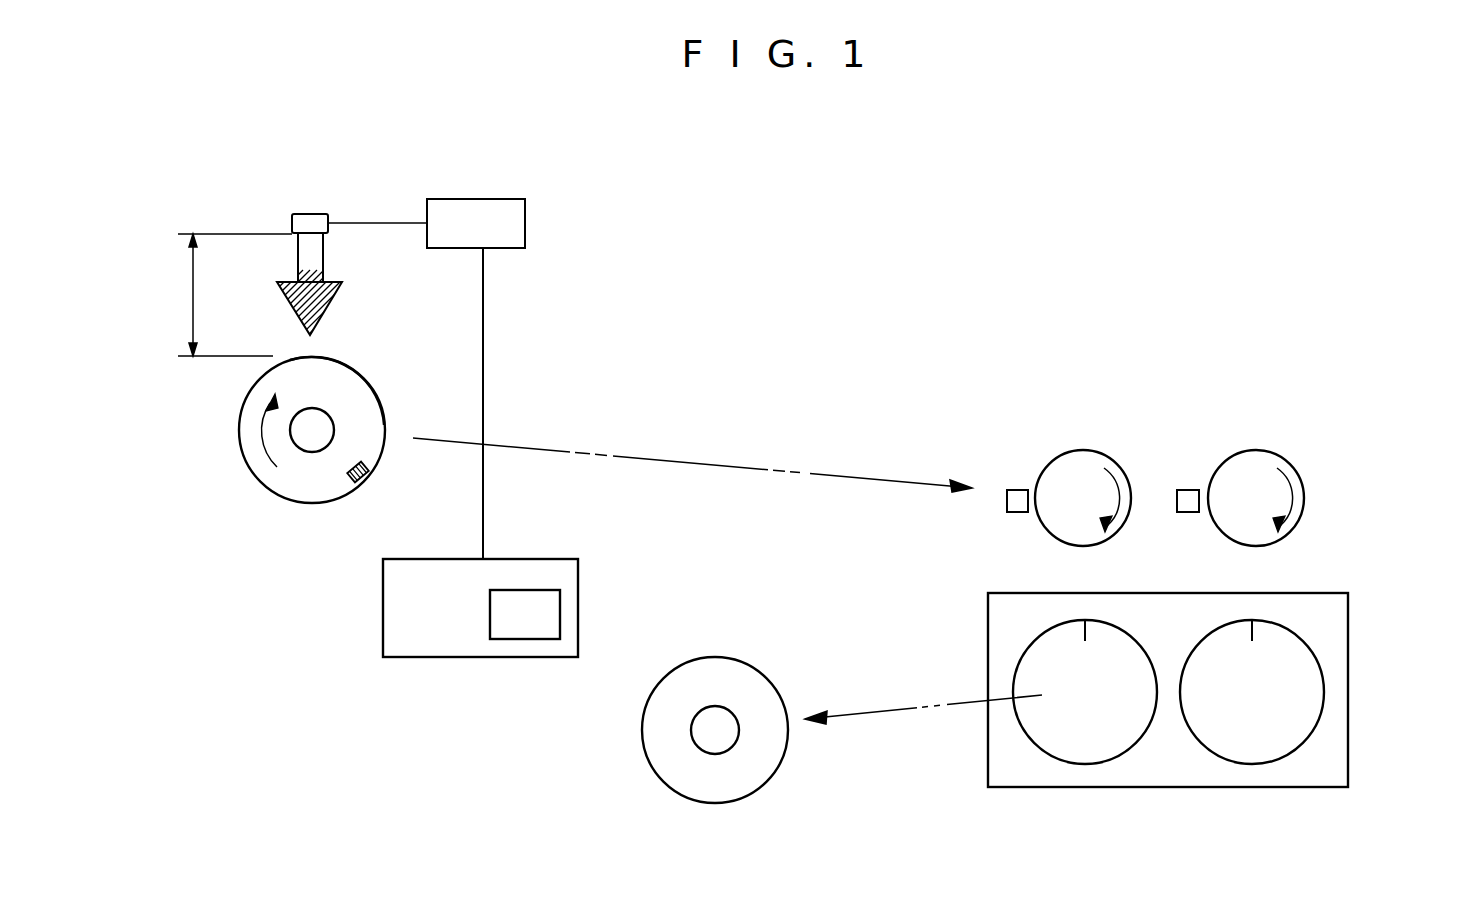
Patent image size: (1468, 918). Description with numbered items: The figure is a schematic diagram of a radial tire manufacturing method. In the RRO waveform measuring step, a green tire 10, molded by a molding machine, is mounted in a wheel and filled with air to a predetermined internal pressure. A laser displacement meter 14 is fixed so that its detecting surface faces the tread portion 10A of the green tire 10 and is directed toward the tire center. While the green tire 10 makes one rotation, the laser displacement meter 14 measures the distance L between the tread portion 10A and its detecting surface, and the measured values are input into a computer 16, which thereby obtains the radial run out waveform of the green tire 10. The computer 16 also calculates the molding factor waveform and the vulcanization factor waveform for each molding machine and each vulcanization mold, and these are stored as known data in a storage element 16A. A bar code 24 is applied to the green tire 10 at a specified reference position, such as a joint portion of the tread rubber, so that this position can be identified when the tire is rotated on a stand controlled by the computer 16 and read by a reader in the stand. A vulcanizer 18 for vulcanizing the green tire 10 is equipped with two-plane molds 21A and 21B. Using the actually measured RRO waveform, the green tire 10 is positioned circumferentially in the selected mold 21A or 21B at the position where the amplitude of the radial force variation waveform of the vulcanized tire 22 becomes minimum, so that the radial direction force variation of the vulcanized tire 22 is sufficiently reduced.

The green tire 10 is at (248, 483).
The tread portion 10A is at (372, 386).
The laser displacement meter 14 is at (489, 199).
The computer 16 is at (427, 657).
The storage element 16A is at (532, 639).
The vulcanizer 18 is at (1364, 686).
The two-plane mold 21A is at (1100, 764).
The two-plane mold 21B is at (1255, 764).
The vulcanized tire 22 is at (662, 778).
The bar code 24 is at (356, 483).
The distance L is at (190, 291).